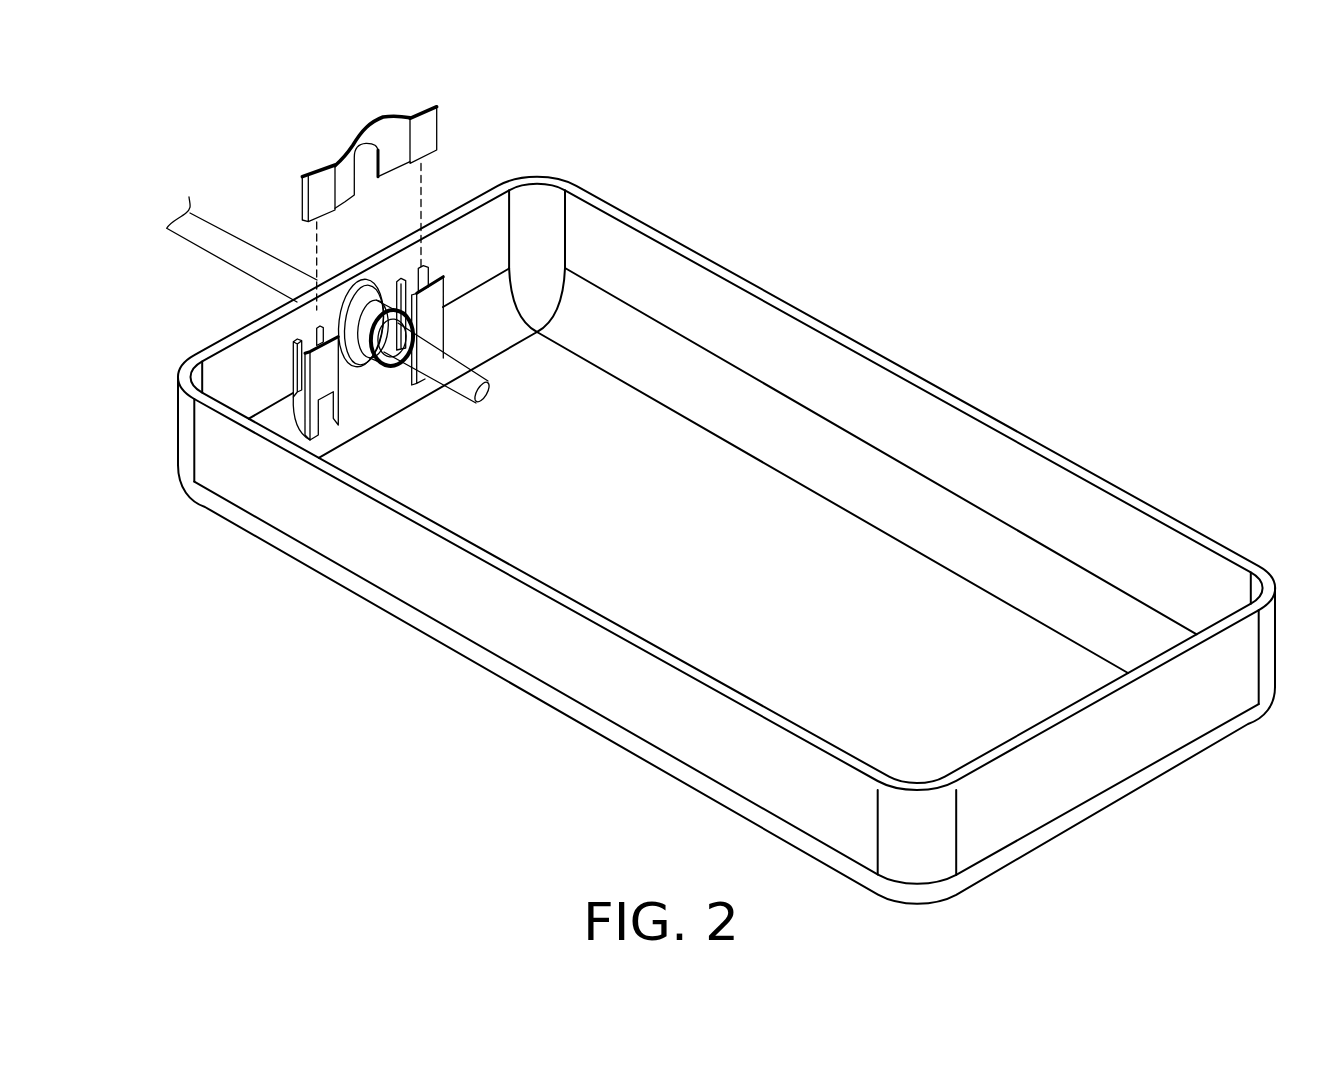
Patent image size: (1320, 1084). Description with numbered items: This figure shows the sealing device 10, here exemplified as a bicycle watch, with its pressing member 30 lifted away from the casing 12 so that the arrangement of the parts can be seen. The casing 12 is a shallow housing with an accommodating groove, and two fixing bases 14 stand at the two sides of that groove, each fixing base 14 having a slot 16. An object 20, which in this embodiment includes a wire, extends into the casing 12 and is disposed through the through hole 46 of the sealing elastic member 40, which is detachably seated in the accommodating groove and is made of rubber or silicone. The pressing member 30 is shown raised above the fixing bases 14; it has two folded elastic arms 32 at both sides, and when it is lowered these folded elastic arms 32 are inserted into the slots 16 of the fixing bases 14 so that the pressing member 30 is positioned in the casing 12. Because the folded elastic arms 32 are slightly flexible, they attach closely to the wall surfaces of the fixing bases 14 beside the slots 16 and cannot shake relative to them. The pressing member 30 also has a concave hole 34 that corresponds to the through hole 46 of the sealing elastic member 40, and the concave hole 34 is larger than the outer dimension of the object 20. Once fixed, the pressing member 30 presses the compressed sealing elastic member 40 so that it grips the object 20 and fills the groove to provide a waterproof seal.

The sealing device 10 is at (1228, 838).
The casing 12 is at (440, 597).
The fixing base 14 is at (230, 364).
The slot 16 is at (305, 368).
The object 20 is at (216, 237).
The pressing member 30 is at (378, 182).
The folded elastic arm 32 is at (322, 193).
The concave hole 34 is at (375, 192).
The sealing elastic member 40 is at (372, 277).
The through hole 46 is at (388, 360).